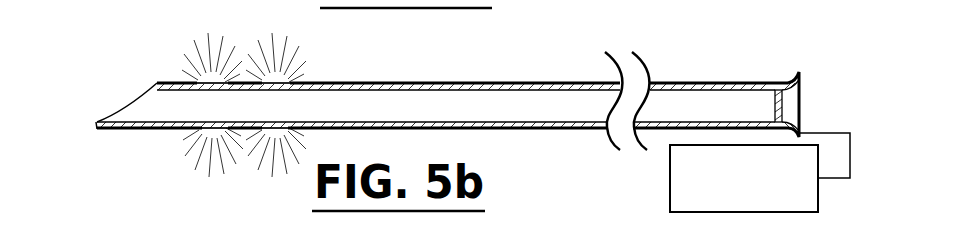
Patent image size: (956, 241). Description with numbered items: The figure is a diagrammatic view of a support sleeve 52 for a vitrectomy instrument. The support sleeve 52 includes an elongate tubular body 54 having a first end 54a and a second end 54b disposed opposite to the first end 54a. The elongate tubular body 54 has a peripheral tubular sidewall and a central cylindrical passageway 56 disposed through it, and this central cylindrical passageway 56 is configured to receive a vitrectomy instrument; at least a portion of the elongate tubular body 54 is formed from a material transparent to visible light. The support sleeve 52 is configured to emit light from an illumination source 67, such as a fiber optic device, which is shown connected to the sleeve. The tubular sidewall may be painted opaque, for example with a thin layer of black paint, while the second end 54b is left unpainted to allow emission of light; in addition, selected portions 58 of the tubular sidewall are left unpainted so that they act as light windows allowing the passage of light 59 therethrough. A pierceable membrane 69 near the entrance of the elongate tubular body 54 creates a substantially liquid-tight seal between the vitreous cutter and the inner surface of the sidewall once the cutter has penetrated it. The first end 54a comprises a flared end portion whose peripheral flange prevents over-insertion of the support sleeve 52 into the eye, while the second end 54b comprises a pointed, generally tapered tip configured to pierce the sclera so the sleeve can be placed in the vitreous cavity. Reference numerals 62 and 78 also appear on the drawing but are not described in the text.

The support sleeve 52 is at (153, 147).
The elongate tubular body 54 is at (521, 124).
The first end 54a is at (799, 72).
The second end 54b is at (123, 108).
The central cylindrical passageway 56 is at (415, 105).
The selected portions of the tubular sidewall 58 is at (277, 82).
The light 59 is at (270, 42).
The reference element 62 is at (57, 236).
The illumination source 67 is at (670, 203).
The pierceable membrane 69 is at (780, 105).
The connector cable 78 is at (823, 187).